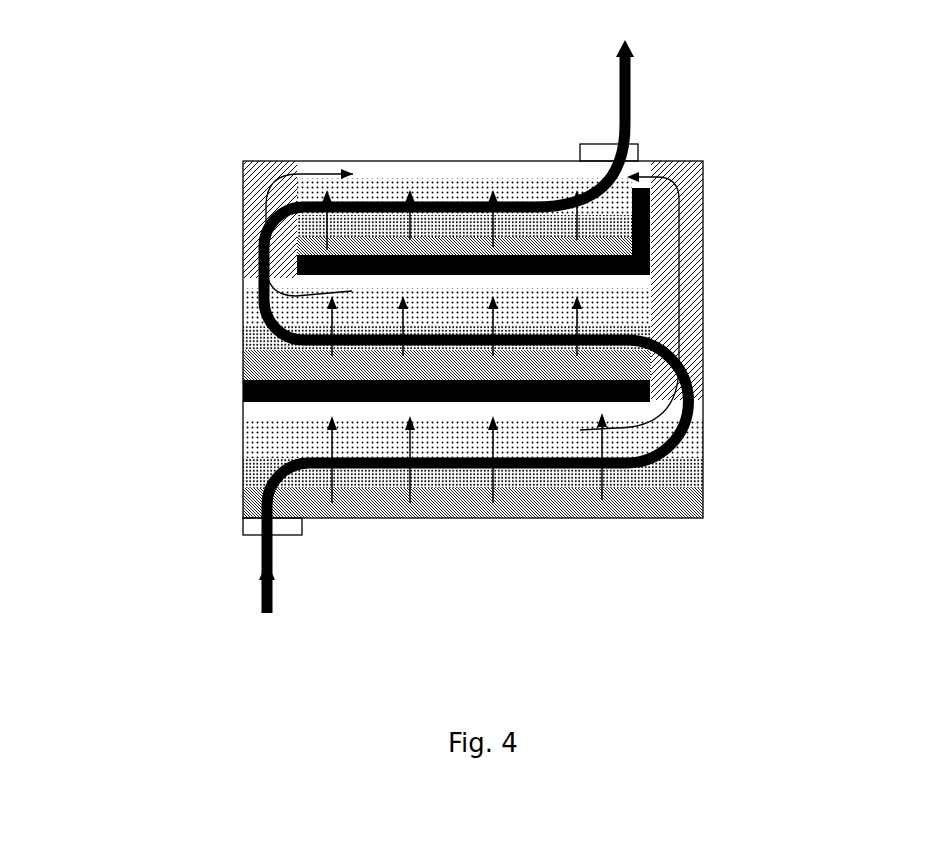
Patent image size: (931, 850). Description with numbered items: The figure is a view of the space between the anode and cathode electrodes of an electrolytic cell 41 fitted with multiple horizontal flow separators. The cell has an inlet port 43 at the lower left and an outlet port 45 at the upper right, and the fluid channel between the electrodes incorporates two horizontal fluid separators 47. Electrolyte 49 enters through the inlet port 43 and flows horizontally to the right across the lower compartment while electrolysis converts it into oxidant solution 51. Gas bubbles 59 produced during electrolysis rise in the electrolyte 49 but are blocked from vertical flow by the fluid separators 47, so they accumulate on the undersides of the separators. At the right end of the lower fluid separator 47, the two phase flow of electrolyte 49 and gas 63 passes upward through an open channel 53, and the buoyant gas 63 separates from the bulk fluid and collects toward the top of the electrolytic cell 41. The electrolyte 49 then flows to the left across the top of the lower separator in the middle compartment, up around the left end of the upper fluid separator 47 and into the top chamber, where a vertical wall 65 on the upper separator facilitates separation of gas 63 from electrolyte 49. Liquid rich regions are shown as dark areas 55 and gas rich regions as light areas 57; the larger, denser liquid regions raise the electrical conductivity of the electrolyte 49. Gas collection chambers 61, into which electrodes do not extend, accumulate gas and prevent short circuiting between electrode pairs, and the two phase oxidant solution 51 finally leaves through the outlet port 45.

The electrolytic cell 41 is at (703, 493).
The inlet port 43 is at (243, 530).
The outlet port 45 is at (638, 147).
The fluid separators 47 is at (300, 276).
The electrolyte 49 is at (263, 600).
The oxidant solution 51 is at (628, 108).
The open channel 53 is at (667, 382).
The dark areas 55 is at (545, 247).
The light areas 57 is at (440, 413).
The gas bubbles 59 is at (328, 232).
The gas collection chambers 61 is at (255, 190).
The gas 63 is at (285, 178).
The vertical wall 65 is at (650, 218).